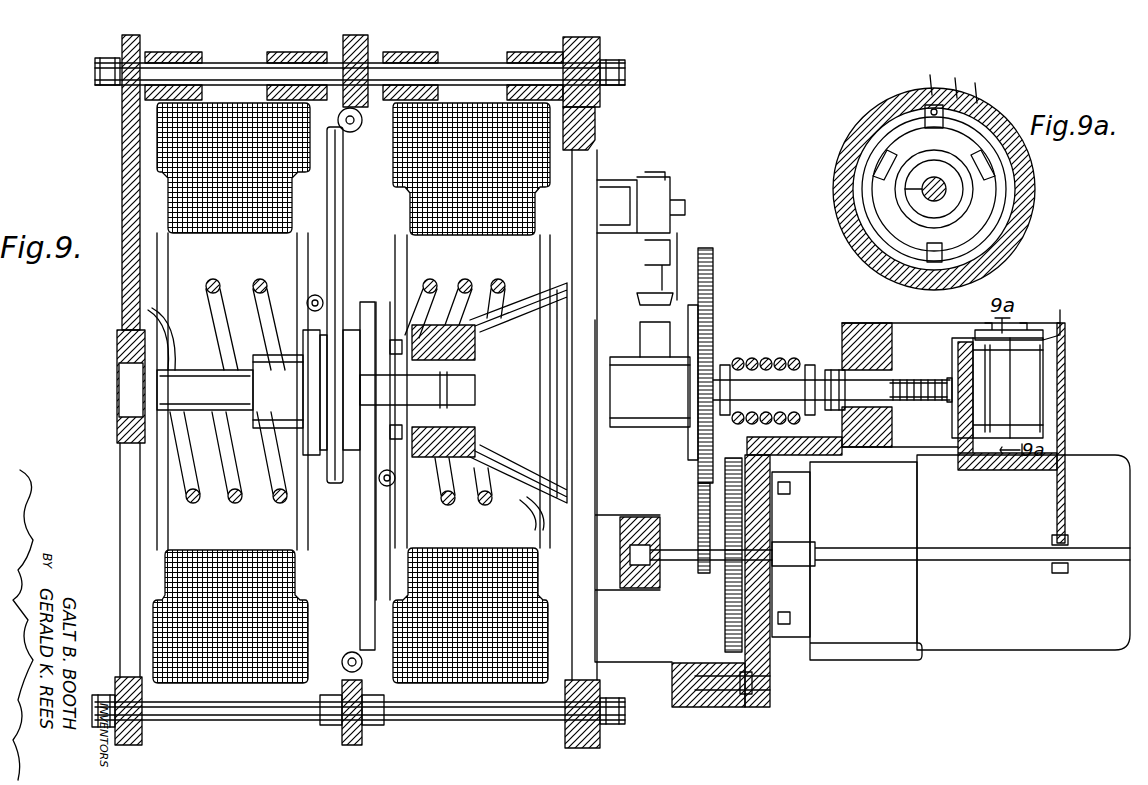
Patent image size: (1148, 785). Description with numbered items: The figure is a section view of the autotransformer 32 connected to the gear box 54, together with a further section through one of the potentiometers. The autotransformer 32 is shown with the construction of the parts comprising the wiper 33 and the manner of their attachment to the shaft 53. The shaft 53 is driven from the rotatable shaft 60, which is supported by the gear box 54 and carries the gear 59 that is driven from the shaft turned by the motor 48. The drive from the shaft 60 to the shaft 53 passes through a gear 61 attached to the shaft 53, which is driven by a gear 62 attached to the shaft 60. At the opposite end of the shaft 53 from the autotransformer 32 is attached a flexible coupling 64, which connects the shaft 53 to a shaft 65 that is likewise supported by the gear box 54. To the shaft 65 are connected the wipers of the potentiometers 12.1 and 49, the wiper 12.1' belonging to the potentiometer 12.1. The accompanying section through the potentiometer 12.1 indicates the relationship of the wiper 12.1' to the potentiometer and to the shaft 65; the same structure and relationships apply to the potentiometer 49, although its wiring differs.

In FIG. 9, the autotransformer 32 is at (286, 680).
In FIG. 9, the wiper 33 is at (360, 500).
In FIG. 9, the motor 48 is at (1082, 475).
In FIG. 9, the potentiometer 49 is at (1035, 345).
In FIG. 9, the shaft 53 is at (597, 385).
In FIG. 9, the gear box 54 is at (848, 325).
In FIG. 9, the gear 59 is at (728, 608).
In FIG. 9, the rotatable shaft 60 is at (680, 562).
In FIG. 9, the gear 61 is at (714, 284).
In FIG. 9, the gear 62 is at (706, 575).
In FIG. 9, the flexible coupling 64 is at (922, 405).
In FIG. 9, the shaft 65 is at (948, 380).
In FIG. 9A, the shaft 65 is at (940, 200).
In FIG. 9, the potentiometer 12.1 is at (991, 365).
In FIG. 9A, the potentiometer 12.1 is at (981, 192).
In FIG. 9A, the wiper 12.1' is at (917, 191).